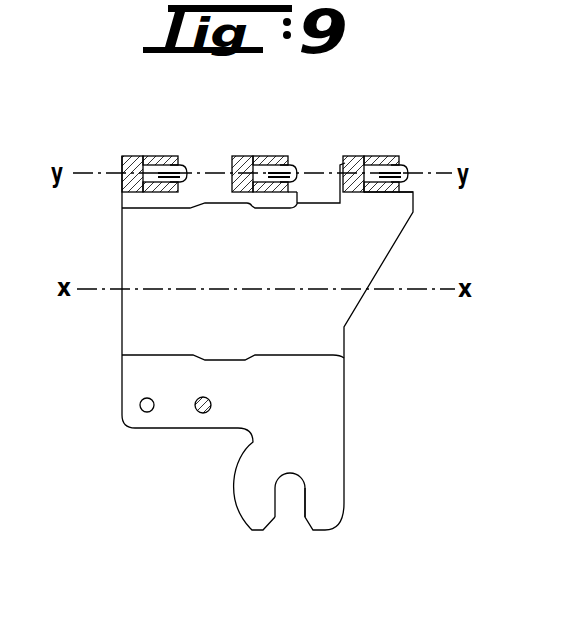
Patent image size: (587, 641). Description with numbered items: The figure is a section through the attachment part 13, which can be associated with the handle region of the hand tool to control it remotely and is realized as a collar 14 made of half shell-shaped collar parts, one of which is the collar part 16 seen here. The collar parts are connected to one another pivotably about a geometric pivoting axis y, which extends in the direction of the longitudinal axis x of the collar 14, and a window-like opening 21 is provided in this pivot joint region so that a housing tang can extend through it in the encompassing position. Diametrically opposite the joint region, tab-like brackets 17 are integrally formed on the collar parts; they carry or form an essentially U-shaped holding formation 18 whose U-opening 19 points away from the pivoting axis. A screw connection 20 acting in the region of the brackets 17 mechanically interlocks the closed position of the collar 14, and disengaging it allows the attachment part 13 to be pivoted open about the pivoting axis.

The attachment part 13 is at (146, 136).
The collar 14 is at (365, 258).
The collar part 16 is at (320, 343).
The brackets 17 is at (190, 390).
The holding formation 18 is at (252, 495).
The U-opening 19 is at (290, 495).
The screw connection 20 is at (142, 412).
The window-like opening 21 is at (318, 190).